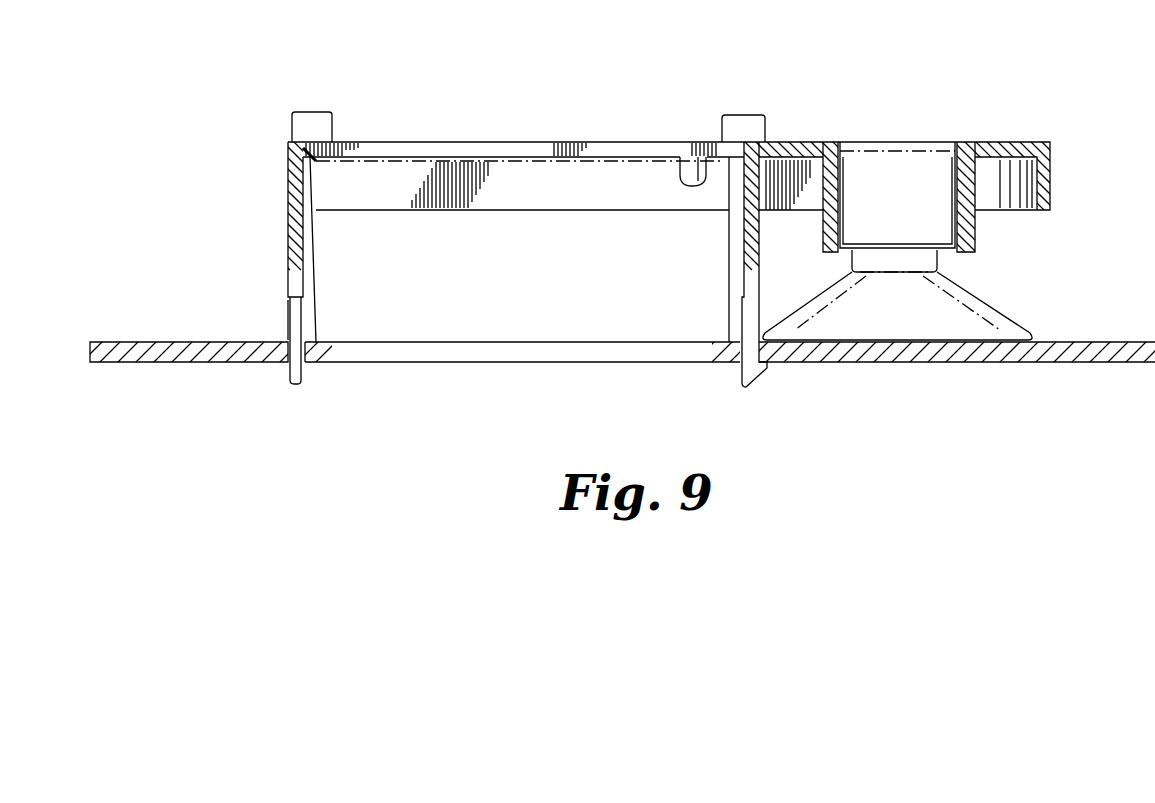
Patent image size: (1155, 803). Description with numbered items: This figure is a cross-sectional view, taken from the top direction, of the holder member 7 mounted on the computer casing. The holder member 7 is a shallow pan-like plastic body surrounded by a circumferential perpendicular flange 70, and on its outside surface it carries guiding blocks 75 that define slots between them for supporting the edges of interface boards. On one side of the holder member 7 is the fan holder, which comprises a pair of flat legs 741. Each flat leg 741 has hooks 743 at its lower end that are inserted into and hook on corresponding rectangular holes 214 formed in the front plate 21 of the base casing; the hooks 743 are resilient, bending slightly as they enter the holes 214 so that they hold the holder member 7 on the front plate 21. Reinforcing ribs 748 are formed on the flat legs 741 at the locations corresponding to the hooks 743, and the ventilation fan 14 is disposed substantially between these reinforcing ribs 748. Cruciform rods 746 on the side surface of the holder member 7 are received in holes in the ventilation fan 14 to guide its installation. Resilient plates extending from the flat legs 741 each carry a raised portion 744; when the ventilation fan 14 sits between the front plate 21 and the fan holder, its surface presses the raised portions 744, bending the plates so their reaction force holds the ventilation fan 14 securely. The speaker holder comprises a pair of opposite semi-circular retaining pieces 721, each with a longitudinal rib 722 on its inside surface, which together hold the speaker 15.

The holder member 7 is at (797, 66).
The circumferential perpendicular flange 70 is at (407, 182).
The guiding blocks 75 is at (313, 120).
The flat legs 741 is at (290, 245).
The hooks 743 is at (292, 372).
The reinforcing ribs 748 is at (311, 246).
The raised portion 744 is at (335, 158).
The cruciform rods 746 is at (686, 195).
The ventilation fan 14 is at (288, 318).
The front plate 21 is at (155, 366).
The holes 214 is at (304, 360).
The retaining pieces 721 is at (976, 233).
The longitudinal rib 722 is at (956, 195).
The speaker 15 is at (1000, 320).